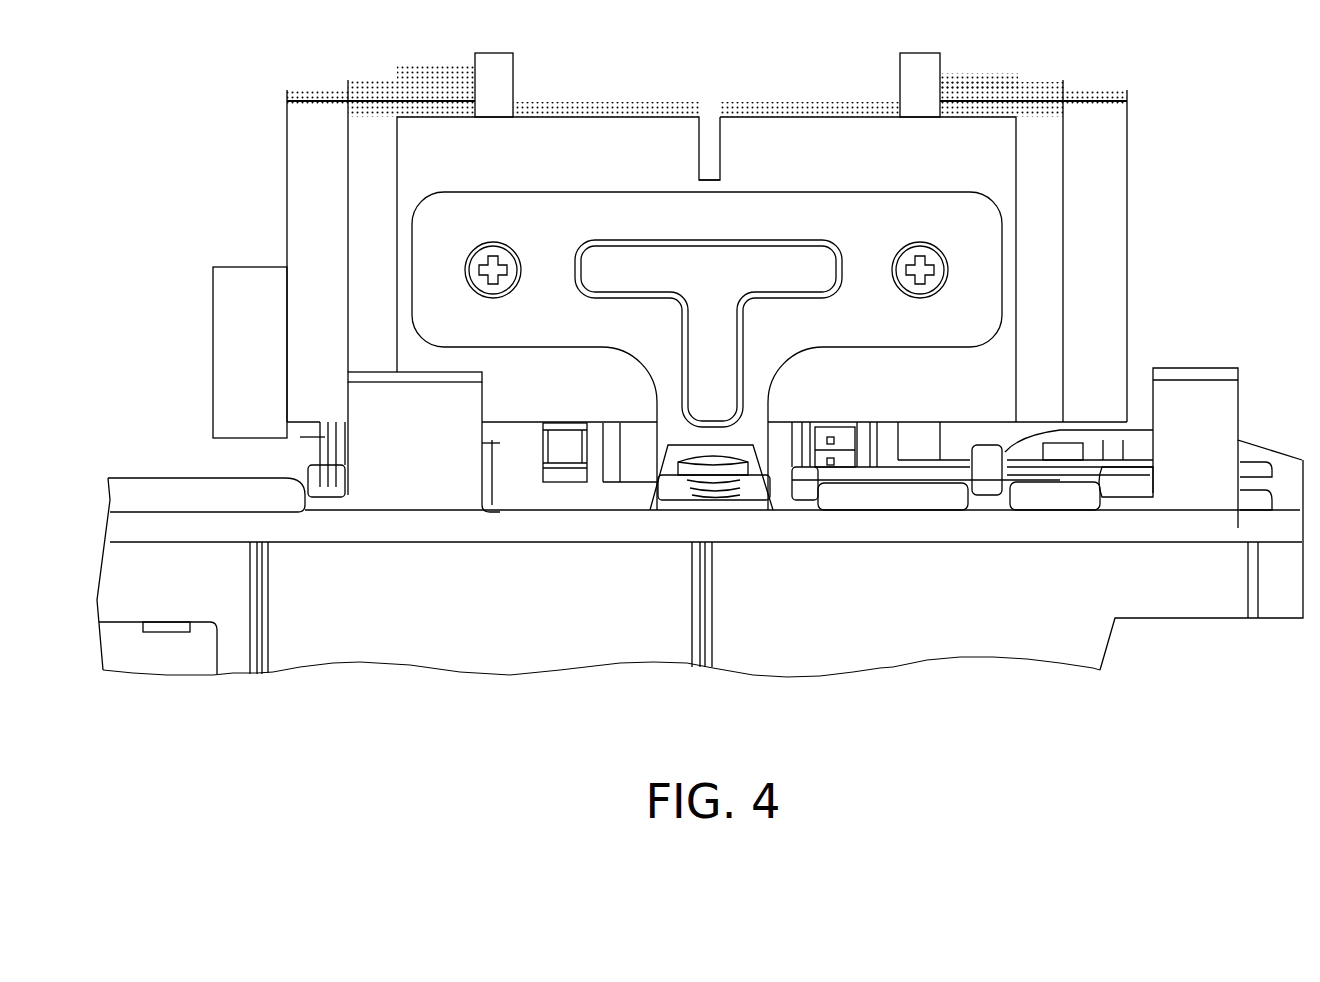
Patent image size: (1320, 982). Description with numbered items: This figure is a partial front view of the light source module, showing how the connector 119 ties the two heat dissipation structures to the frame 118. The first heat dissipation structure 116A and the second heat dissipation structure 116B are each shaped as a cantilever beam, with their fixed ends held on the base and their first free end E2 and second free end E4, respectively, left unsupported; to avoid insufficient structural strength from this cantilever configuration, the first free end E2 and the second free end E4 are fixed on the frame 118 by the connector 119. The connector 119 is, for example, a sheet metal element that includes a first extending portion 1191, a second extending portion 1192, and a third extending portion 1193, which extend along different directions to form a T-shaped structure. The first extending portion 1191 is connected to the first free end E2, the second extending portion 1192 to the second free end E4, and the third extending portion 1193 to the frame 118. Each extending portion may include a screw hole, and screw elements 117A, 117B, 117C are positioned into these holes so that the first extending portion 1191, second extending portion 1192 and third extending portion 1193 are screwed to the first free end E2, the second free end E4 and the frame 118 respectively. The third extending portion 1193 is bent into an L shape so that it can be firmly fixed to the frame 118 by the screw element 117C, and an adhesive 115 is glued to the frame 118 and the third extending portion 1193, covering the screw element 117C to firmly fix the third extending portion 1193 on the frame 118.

The adhesive 115 is at (687, 447).
The first heat dissipation structure 116A is at (789, 140).
The second heat dissipation structure 116B is at (625, 140).
The screw element 117A is at (948, 262).
The screw element 117B is at (470, 258).
The screw element 117C is at (752, 505).
The frame 118 is at (1240, 400).
The connector 119 is at (916, 380).
The first extending portion 1191 is at (913, 227).
The second extending portion 1192 is at (507, 227).
The third extending portion 1193 is at (688, 505).
The first free end E2 is at (942, 153).
The second free end E4 is at (478, 155).